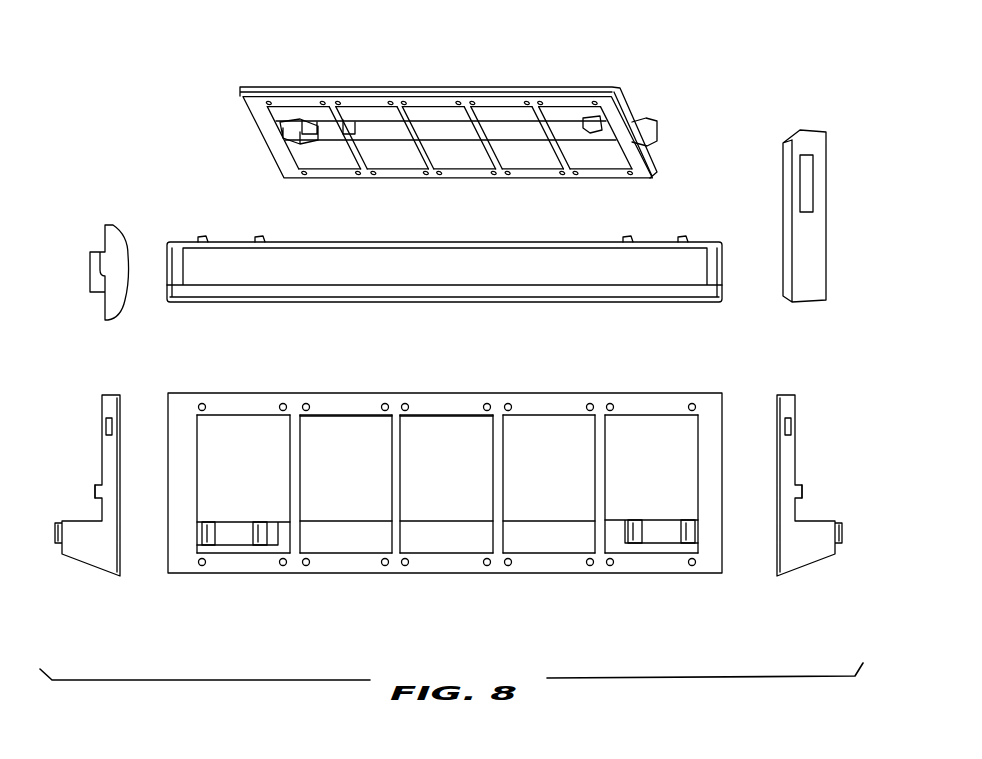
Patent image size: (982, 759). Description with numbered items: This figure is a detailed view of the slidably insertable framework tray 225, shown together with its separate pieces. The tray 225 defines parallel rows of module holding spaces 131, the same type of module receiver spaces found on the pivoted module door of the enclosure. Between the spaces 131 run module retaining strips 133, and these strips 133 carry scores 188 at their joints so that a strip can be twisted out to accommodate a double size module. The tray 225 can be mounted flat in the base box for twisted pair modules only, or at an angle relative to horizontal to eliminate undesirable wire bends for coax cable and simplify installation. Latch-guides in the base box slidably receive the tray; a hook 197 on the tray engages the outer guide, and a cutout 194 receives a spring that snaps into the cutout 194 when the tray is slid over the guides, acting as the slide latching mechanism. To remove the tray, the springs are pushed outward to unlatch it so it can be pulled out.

The module receiver spaces 131 is at (418, 103).
The module retaining strips 133 is at (484, 151).
The scores 188 is at (328, 101).
The cutout 194 is at (106, 425).
The hook 197 is at (90, 270).
The framework tray 225 is at (554, 78).